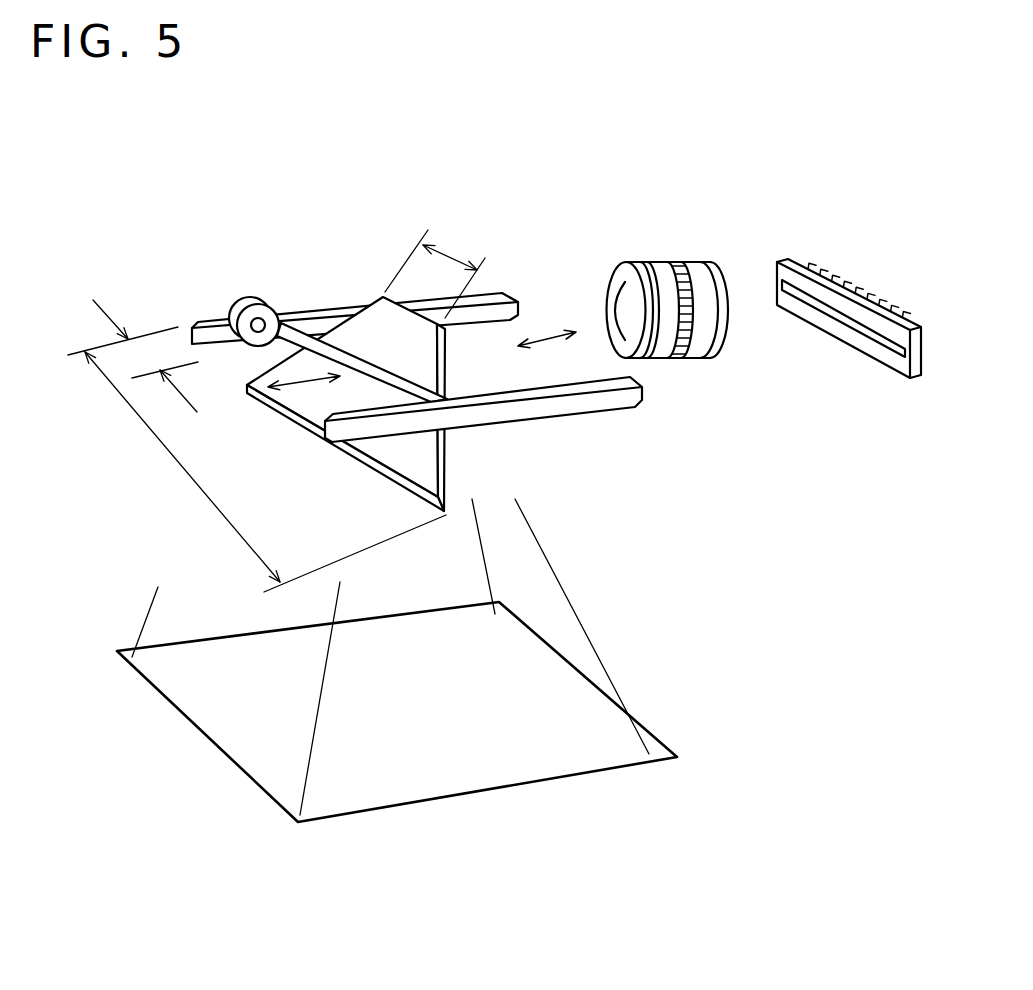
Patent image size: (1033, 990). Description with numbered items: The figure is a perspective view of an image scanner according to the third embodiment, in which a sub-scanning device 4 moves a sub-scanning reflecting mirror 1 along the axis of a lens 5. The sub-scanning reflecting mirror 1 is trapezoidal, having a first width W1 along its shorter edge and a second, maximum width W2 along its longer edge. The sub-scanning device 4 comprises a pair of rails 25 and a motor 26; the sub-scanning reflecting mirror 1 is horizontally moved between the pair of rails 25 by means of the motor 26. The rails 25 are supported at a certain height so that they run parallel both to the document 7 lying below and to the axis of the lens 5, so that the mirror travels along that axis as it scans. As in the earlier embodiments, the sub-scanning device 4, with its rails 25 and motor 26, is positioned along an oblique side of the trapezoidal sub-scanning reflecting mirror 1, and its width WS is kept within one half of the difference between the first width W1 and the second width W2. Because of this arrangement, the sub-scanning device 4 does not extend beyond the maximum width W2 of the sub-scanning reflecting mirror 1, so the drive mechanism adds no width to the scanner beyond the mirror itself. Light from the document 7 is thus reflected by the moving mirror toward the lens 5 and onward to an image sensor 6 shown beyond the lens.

The sub-scanning reflecting mirror 1 is at (376, 298).
The sub-scanning device 4 is at (348, 259).
The rails 25 is at (313, 310).
The motor 26 is at (229, 284).
The lens 5 is at (687, 358).
The image sensor 6 is at (775, 263).
The document 7 is at (463, 794).
The first width W1 is at (450, 254).
The second width W2 is at (160, 445).
The width of the sub-scanning device WS is at (152, 352).